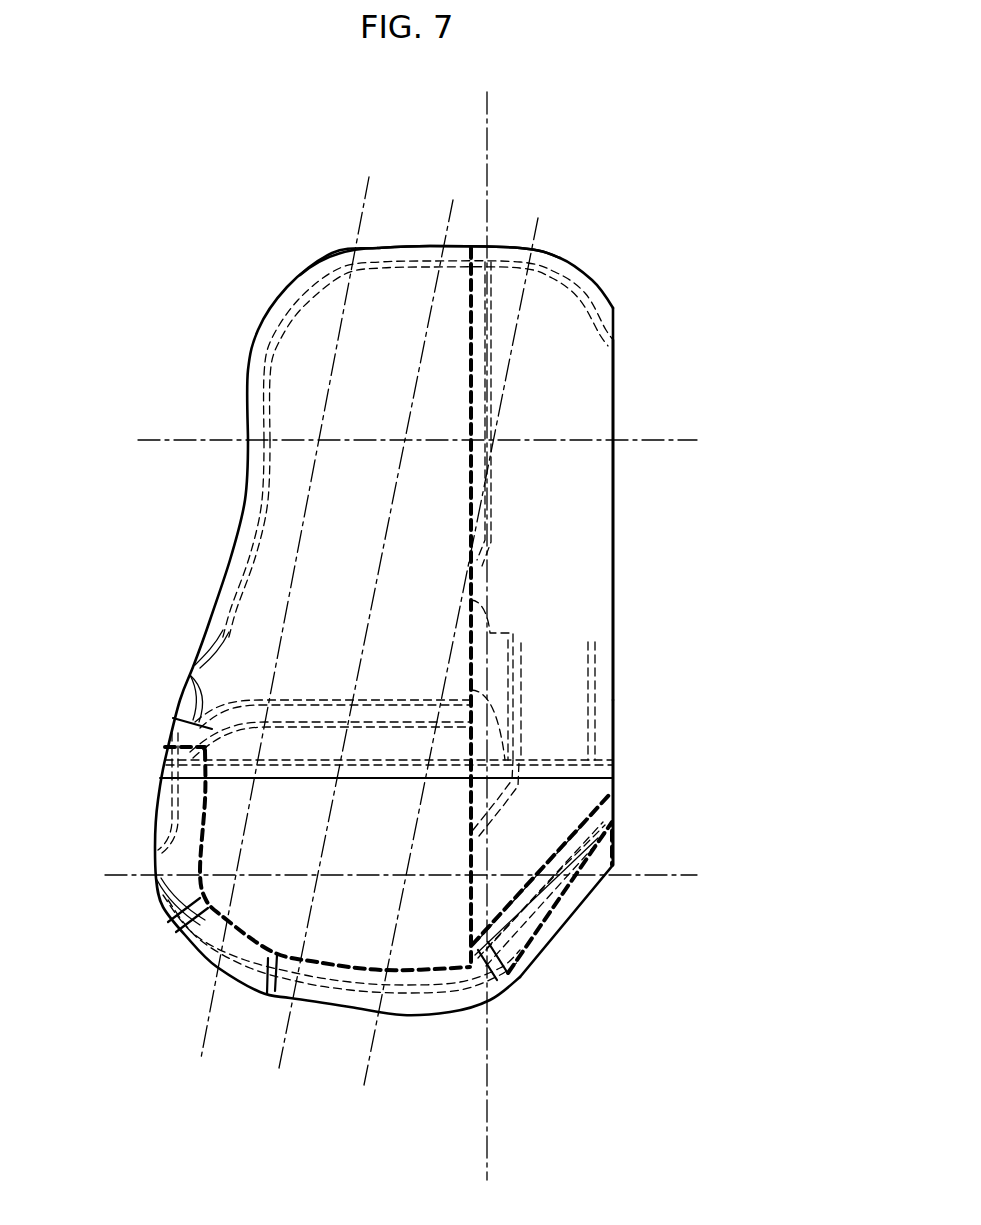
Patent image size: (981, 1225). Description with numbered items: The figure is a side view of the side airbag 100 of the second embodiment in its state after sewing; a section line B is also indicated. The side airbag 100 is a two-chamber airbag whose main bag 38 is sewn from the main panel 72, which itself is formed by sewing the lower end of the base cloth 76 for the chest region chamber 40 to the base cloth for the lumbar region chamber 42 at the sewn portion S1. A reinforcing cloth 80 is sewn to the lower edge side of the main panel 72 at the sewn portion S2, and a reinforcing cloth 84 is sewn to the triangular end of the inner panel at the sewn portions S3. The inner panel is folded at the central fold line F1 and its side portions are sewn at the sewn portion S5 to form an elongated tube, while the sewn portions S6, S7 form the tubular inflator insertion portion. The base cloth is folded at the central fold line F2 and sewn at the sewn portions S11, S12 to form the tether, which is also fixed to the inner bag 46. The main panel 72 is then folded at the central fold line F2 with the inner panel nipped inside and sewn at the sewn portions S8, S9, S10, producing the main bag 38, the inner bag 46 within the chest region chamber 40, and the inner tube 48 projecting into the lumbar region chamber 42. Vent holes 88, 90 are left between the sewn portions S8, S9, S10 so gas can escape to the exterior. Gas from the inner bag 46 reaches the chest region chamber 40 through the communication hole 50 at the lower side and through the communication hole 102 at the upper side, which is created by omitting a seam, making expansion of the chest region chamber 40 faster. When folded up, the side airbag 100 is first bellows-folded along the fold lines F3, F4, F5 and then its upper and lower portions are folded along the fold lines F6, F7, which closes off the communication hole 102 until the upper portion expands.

The side airbag 100 is at (266, 214).
The main bag 38 is at (340, 246).
The main panel 72 is at (426, 212).
The communication hole 102 is at (490, 318).
The inner bag 46 is at (584, 400).
The base cloth 76 is at (682, 520).
The chest region chamber 40 is at (288, 500).
The communication hole 50 is at (485, 580).
The vent hole 88 is at (193, 658).
The lumbar region chamber 42 is at (165, 750).
The vent hole 90 is at (158, 856).
The reinforcing cloth 80 is at (190, 950).
The reinforcing cloth 84 is at (570, 905).
The inner tube 48 is at (503, 856).
The sewn portion S1 is at (375, 780).
The sewn portion S2 is at (426, 980).
The sewn portions S3 is at (545, 962).
The sewn portion S5 is at (500, 798).
The sewn portion S6 is at (597, 665).
The sewn portion S7 is at (517, 655).
The sewn portion S8 is at (265, 326).
The sewn portion S9 is at (172, 796).
The sewn portion S10 is at (336, 992).
The sewn portion S11 is at (300, 696).
The sewn portion S12 is at (397, 696).
The central fold line F1 is at (614, 487).
The central fold line F2 is at (678, 668).
The fold line F3 is at (196, 1040).
The fold line F4 is at (278, 1055).
The fold line F5 is at (363, 1068).
The fold line F6 is at (175, 440).
The fold line F7 is at (122, 876).
The section line B is at (480, 122).